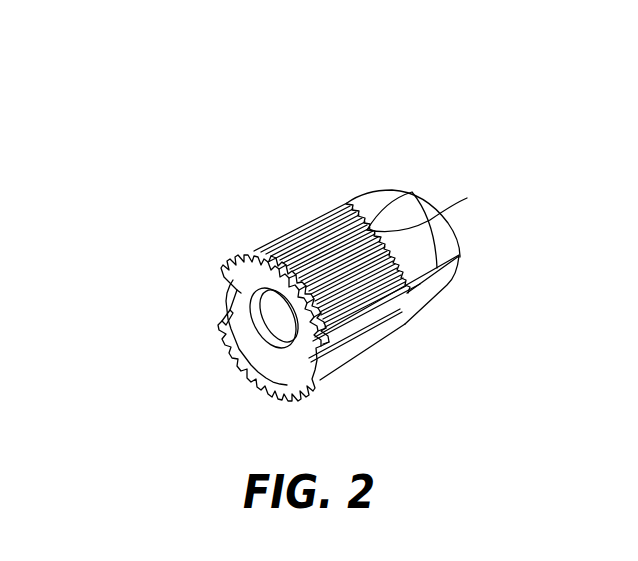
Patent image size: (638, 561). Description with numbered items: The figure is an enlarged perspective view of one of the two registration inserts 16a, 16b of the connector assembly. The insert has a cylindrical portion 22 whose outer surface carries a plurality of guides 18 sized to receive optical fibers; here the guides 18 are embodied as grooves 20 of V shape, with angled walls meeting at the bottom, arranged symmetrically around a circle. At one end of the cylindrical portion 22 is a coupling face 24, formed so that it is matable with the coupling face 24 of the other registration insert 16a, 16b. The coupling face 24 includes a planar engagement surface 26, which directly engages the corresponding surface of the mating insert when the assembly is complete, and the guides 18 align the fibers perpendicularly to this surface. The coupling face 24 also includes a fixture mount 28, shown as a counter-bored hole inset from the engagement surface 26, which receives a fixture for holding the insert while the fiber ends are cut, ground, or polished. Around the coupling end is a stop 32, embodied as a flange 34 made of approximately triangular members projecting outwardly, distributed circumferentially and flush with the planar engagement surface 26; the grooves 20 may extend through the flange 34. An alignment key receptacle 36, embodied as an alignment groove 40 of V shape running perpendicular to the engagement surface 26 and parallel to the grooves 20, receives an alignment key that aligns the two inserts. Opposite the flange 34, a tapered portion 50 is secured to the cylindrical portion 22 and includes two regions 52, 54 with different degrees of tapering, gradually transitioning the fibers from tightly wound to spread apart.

The registration insert 16a is at (287, 291).
The registration insert 16b is at (187, 224).
The guides 18 is at (306, 206).
The grooves 20 is at (467, 198).
The cylindrical portion 22 is at (420, 338).
The coupling face 24 is at (210, 370).
The planar engagement surface 26 is at (217, 321).
The fixture mount 28 is at (267, 353).
The stop 32 is at (230, 245).
The flange 34 is at (222, 258).
The alignment key receptacle 36 is at (294, 364).
The alignment groove 40 is at (407, 299).
The tapered portion 50 is at (323, 199).
The region 52 is at (385, 210).
The region 54 is at (424, 205).